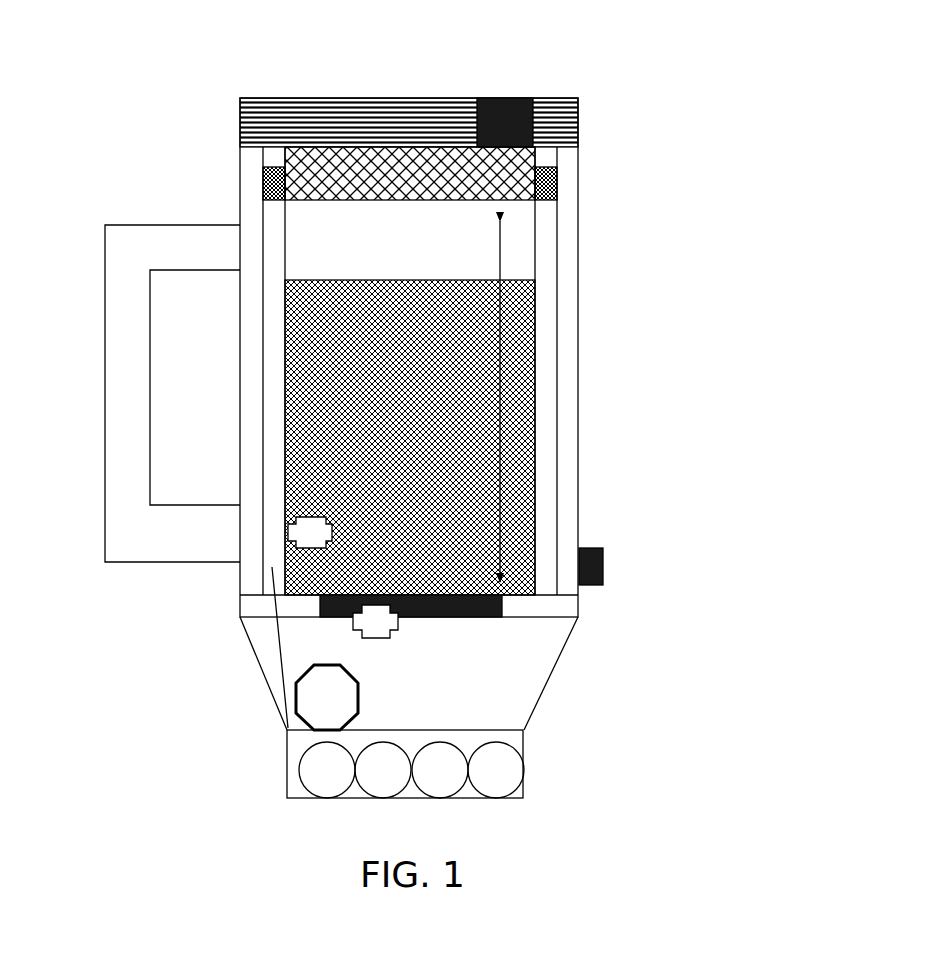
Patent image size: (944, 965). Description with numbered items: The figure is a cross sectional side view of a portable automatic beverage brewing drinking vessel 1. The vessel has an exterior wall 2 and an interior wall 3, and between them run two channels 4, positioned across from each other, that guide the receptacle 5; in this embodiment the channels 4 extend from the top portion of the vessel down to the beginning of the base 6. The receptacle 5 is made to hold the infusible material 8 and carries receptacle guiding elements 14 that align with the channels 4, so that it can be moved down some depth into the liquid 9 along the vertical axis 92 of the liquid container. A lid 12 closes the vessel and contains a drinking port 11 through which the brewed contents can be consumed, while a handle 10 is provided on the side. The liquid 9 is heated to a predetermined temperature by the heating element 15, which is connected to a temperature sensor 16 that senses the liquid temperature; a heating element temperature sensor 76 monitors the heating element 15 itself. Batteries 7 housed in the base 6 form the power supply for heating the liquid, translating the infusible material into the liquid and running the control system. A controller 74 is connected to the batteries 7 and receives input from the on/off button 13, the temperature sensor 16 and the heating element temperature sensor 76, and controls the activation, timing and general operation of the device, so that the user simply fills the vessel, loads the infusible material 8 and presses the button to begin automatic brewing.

The drinking vessel 1 is at (392, 428).
The exterior wall 2 is at (580, 425).
The interior wall 3 is at (535, 470).
The channels 4 is at (275, 415).
The receptacle 5 is at (400, 78).
The base 6 is at (497, 707).
The batteries 7 is at (500, 765).
The infusible material 8 is at (375, 165).
The liquid 9 is at (307, 302).
The handle 10 is at (117, 210).
The drinking port 11 is at (520, 97).
The lid 12 is at (285, 98).
The on/off button 13 is at (603, 560).
The receptacle guiding elements 14 is at (293, 182).
The heating element 15 is at (505, 606).
The temperature sensor 16 is at (300, 540).
The controller 74 is at (310, 695).
The heating element temperature sensor 76 is at (368, 630).
The vertical axis 92 is at (508, 360).